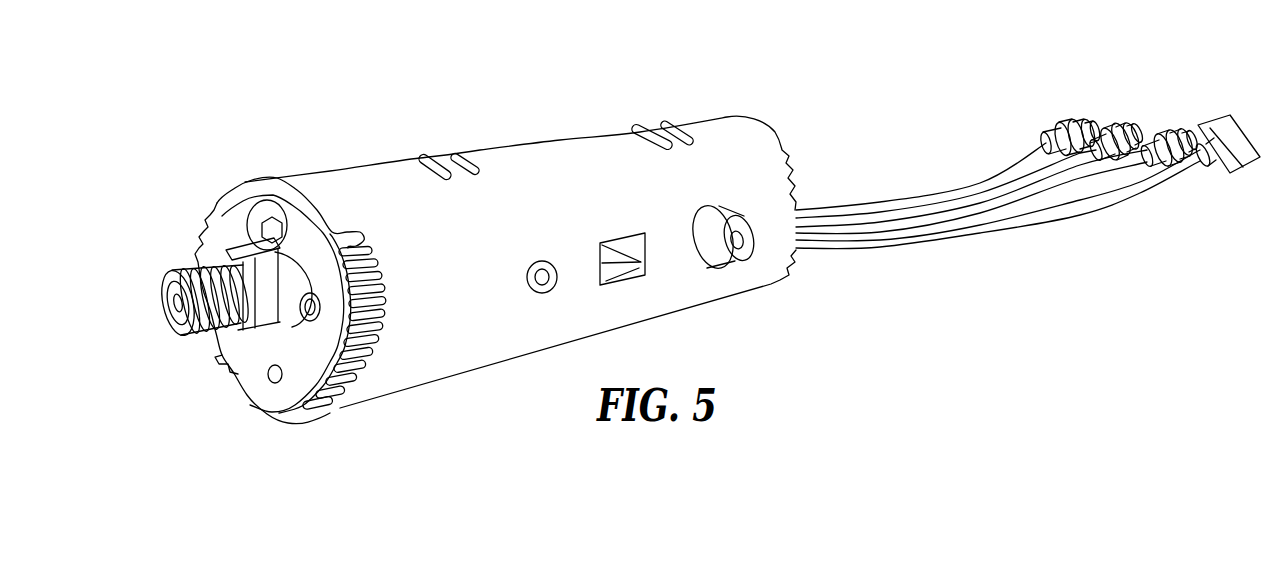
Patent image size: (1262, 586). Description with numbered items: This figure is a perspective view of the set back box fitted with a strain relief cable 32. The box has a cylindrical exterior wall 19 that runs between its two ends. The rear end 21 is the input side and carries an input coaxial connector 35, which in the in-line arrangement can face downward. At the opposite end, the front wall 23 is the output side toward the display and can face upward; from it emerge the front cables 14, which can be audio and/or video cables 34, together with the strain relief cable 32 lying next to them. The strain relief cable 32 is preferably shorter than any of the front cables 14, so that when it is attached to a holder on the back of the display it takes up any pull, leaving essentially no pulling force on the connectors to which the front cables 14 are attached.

The front cables 14 is at (838, 206).
The exterior wall 19 is at (463, 150).
The rear end 21 is at (295, 353).
The front wall 23 is at (792, 156).
The strain relief cable 32 is at (1031, 221).
The audio and/or video cables 34 is at (1023, 143).
The input coaxial connector 35 is at (165, 315).